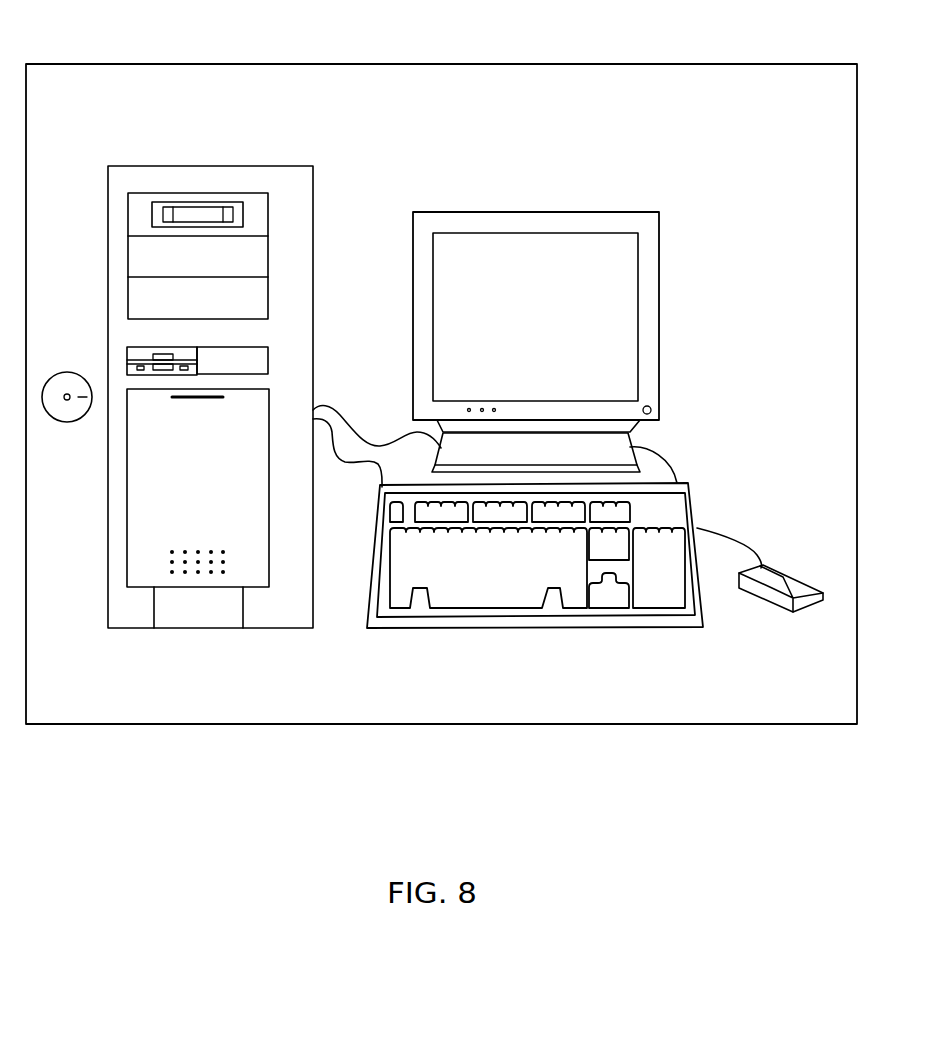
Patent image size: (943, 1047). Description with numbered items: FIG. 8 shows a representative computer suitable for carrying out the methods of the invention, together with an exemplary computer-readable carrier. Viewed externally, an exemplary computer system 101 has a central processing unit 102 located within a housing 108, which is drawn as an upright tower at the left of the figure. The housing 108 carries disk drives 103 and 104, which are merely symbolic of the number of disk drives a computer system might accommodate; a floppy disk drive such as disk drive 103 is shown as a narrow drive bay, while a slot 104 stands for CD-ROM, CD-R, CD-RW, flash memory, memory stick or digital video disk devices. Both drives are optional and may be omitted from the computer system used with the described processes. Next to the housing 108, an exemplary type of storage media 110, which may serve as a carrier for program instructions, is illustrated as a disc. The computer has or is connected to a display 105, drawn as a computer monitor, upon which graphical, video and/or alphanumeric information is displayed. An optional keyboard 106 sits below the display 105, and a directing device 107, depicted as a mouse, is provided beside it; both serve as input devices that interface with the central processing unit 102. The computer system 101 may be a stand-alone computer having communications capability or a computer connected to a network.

The computer system 101 is at (197, 63).
The central processing unit 102 is at (254, 263).
The disk drive 103 is at (143, 353).
The disk drive slot 104 is at (256, 207).
The display 105 is at (615, 218).
The keyboard 106 is at (688, 482).
The directing device 107 is at (778, 598).
The housing 108 is at (214, 371).
The storage media 110 is at (63, 415).